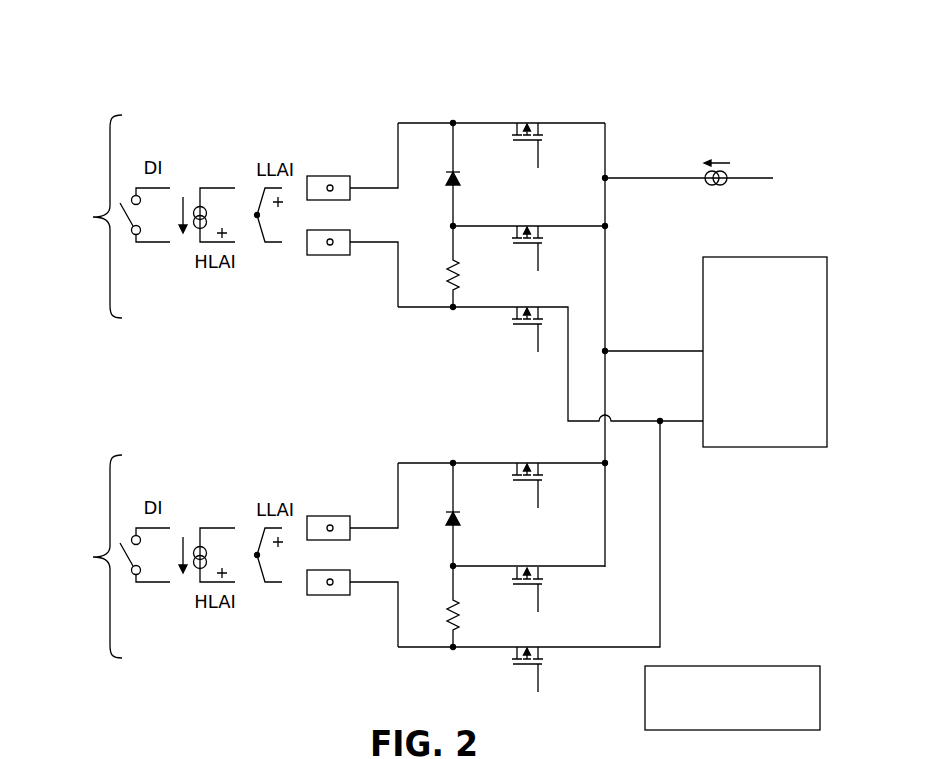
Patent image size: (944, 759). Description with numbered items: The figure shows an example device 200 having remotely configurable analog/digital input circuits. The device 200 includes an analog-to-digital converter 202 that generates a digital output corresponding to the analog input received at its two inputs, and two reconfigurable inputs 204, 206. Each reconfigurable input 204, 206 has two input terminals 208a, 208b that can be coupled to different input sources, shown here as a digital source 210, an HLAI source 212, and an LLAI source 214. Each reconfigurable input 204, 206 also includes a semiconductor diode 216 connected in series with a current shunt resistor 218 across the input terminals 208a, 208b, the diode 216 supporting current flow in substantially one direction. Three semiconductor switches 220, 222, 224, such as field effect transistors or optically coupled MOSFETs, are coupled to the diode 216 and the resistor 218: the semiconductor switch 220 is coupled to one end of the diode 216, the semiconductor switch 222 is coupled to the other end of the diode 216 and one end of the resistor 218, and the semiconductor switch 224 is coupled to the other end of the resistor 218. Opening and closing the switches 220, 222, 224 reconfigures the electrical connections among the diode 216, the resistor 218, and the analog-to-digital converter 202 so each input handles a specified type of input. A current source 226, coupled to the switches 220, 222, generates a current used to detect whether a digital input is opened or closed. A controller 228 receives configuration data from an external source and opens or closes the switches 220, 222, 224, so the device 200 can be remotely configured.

The device 200 is at (675, 112).
The analog-to-digital converter 202 is at (767, 447).
The reconfigurable input 204 is at (171, 216).
The reconfigurable input 206 is at (171, 556).
The input terminal 208a is at (330, 176).
The input terminal 208b is at (330, 255).
The digital source 210 is at (157, 242).
The HLAI source 212 is at (218, 188).
The LLAI source 214 is at (280, 242).
The semiconductor diode 216 is at (447, 173).
The current shunt resistor 218 is at (460, 268).
The semiconductor switch 220 is at (533, 122).
The semiconductor switch 222 is at (530, 225).
The semiconductor switch 224 is at (530, 325).
The current source 226 is at (713, 186).
The controller 228 is at (743, 666).